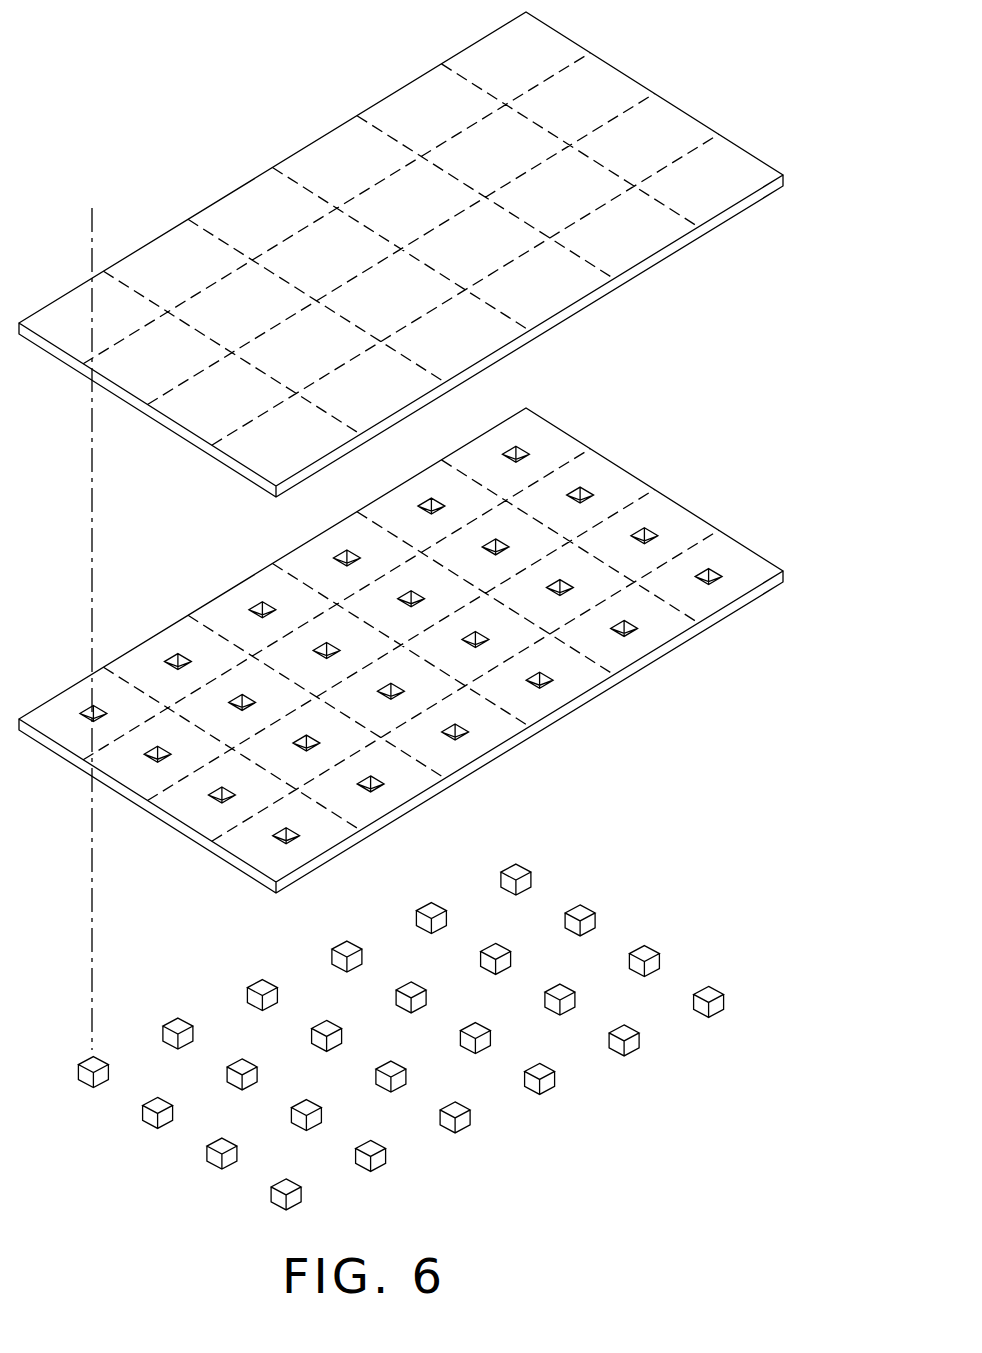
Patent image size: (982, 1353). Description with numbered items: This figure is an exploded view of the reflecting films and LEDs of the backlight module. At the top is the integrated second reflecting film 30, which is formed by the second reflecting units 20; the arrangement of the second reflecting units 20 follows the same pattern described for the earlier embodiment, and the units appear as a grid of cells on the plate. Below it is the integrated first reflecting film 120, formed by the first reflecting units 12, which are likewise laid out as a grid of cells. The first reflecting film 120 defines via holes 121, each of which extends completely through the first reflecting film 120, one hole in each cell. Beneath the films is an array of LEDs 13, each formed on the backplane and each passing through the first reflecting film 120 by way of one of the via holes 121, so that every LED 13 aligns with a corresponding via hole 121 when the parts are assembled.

The second reflecting film 30 is at (401, 254).
The second reflecting unit 20 is at (680, 125).
The first reflecting film 120 is at (440, 650).
The first reflecting unit 12 is at (719, 550).
The via hole 121 is at (718, 572).
The LED 13 is at (645, 947).